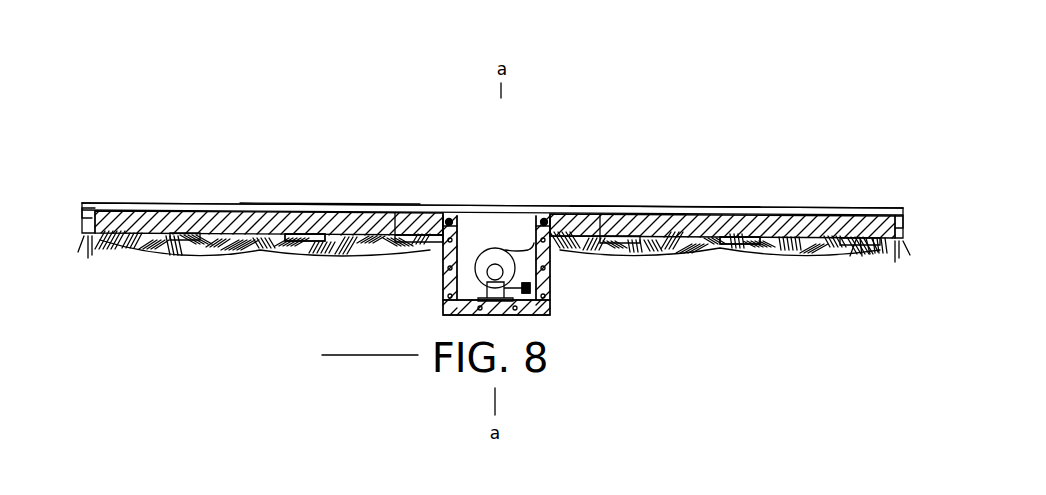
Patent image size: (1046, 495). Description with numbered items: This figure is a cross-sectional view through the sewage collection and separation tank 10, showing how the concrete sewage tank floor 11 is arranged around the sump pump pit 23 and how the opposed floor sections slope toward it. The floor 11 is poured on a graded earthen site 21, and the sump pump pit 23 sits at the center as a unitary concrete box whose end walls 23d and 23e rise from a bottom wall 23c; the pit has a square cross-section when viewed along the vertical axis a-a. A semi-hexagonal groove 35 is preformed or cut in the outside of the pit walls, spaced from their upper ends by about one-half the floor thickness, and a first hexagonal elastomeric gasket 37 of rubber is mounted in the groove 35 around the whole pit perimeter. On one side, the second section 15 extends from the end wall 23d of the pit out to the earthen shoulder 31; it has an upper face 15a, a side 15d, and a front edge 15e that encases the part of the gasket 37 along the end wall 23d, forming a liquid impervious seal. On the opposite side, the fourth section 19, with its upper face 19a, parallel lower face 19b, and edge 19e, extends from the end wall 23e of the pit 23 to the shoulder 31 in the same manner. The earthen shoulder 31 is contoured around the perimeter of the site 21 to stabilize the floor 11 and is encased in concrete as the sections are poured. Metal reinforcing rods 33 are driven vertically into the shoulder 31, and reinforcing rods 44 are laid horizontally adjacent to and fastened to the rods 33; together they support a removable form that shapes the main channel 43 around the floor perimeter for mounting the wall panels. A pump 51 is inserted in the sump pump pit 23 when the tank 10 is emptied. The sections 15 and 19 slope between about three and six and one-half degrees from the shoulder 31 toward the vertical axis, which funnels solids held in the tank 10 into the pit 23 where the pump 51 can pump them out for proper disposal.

The sewage collection and separation tank 10 is at (543, 95).
The sewage tank floor 11 is at (733, 210).
The second section 15 is at (778, 212).
The upper face 15a is at (657, 209).
The side 15d is at (690, 244).
The front edge 15e is at (548, 214).
The fourth section 19 is at (240, 208).
The upper face 19a is at (348, 209).
The lower face 19b is at (287, 246).
The edge 19e is at (444, 222).
The earthen site 21 is at (170, 240).
The sump pump pit 23 is at (550, 290).
The bottom wall 23c is at (550, 316).
The end wall 23d is at (552, 275).
The end wall 23e is at (448, 290).
The earthen shoulder 31 is at (862, 252).
The metal reinforcing rods 33 is at (95, 240).
The semi-hexagonal groove 35 is at (450, 222).
The first hexagonal elastomeric gasket 37 is at (457, 226).
The main channel 43 is at (93, 210).
The reinforcing rods 44 is at (84, 205).
The pump 51 is at (500, 250).